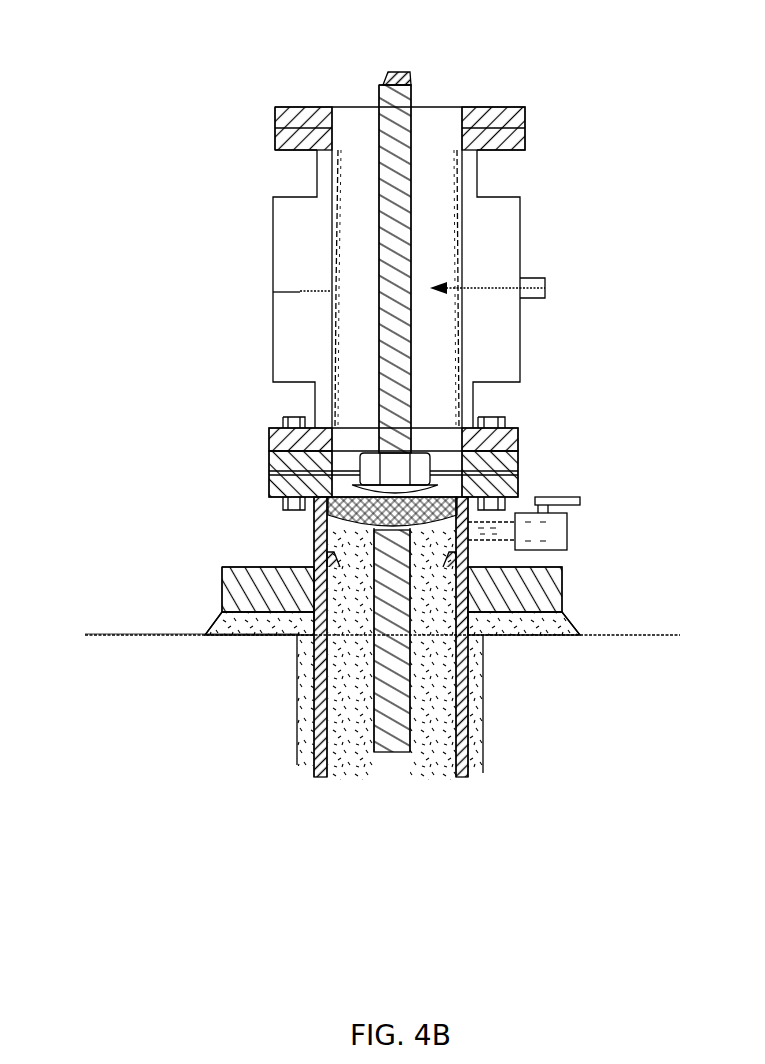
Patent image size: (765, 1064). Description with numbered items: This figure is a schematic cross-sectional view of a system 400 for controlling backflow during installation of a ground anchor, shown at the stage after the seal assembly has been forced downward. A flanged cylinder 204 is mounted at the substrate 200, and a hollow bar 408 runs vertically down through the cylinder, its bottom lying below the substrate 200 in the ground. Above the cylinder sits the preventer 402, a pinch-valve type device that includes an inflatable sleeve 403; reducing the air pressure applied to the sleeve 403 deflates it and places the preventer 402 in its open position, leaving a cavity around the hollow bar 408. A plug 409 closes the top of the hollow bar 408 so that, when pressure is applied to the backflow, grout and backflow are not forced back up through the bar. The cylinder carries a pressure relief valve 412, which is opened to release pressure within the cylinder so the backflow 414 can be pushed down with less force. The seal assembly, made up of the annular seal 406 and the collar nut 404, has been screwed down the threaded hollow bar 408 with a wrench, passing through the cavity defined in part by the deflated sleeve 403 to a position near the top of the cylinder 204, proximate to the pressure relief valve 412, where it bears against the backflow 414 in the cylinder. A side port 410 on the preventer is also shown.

The system for controlling backflow 400 is at (172, 49).
The preventer 402 is at (585, 195).
The inflatable sleeve 403 is at (338, 286).
The collar nut 404 is at (275, 453).
The annular seal 406 is at (327, 503).
The hollow bar 408 is at (392, 112).
The plug 409 is at (412, 80).
The side port 410 is at (540, 280).
The pressure relief valve 412 is at (567, 530).
The backflow 414 is at (435, 698).
The flanged cylinder 204 is at (203, 782).
The substrate 200 is at (262, 705).